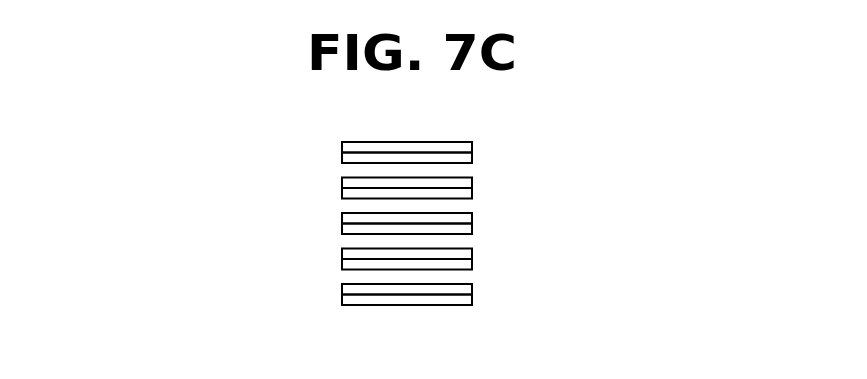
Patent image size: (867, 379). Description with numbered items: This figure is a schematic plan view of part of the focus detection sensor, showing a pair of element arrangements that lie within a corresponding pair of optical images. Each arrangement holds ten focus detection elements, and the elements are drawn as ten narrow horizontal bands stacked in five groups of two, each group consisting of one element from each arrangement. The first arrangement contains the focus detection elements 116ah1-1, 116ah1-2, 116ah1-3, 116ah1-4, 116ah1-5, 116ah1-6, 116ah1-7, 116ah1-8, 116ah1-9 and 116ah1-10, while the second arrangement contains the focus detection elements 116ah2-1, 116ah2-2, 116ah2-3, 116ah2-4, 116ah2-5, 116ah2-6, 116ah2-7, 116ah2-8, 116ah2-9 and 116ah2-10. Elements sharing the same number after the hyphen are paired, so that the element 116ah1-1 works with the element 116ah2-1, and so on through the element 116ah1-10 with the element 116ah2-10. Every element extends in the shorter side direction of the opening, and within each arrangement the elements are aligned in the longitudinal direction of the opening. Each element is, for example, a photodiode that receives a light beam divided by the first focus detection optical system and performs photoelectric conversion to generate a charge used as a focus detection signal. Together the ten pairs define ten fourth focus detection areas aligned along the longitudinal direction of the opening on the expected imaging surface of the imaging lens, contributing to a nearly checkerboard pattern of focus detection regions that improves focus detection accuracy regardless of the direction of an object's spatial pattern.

The focus detection element 116ah1-1 is at (556, 125).
The focus detection element 116ah2-1 is at (472, 147).
The focus detection element 116ah1-2 is at (556, 146).
The focus detection element 116ah2-2 is at (472, 158).
The focus detection element 116ah1-3 is at (556, 176).
The focus detection element 116ah2-3 is at (472, 182).
The focus detection element 116ah1-4 is at (556, 205).
The focus detection element 116ah2-4 is at (472, 193).
The focus detection element 116ah1-5 is at (556, 233).
The focus detection element 116ah2-5 is at (472, 218).
The focus detection element 116ah1-6 is at (556, 255).
The focus detection element 116ah2-6 is at (472, 228).
The focus detection element 116ah1-7 is at (556, 284).
The focus detection element 116ah2-7 is at (472, 254).
The focus detection element 116ah1-8 is at (556, 304).
The focus detection element 116ah2-8 is at (472, 264).
The focus detection element 116ah1-9 is at (267, 271).
The focus detection element 116ah2-9 is at (342, 289).
The focus detection element 116ah1-10 is at (253, 296).
The focus detection element 116ah2-10 is at (342, 300).